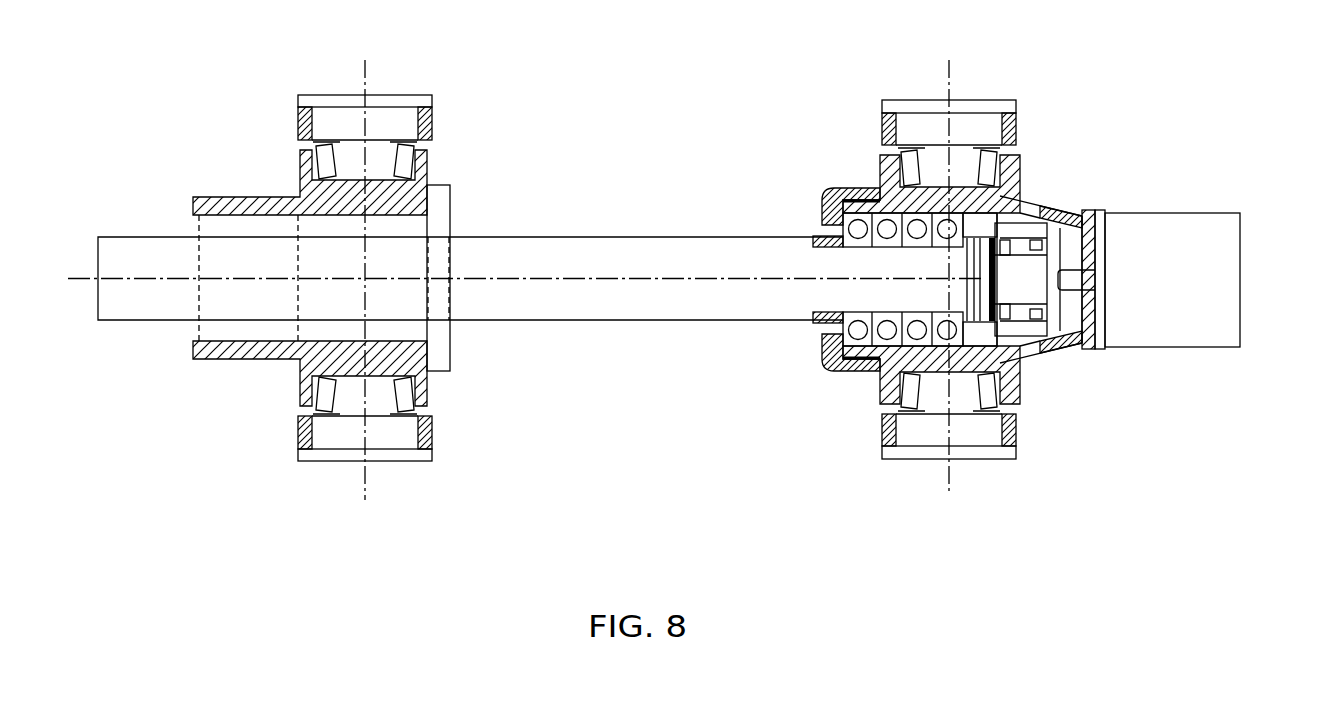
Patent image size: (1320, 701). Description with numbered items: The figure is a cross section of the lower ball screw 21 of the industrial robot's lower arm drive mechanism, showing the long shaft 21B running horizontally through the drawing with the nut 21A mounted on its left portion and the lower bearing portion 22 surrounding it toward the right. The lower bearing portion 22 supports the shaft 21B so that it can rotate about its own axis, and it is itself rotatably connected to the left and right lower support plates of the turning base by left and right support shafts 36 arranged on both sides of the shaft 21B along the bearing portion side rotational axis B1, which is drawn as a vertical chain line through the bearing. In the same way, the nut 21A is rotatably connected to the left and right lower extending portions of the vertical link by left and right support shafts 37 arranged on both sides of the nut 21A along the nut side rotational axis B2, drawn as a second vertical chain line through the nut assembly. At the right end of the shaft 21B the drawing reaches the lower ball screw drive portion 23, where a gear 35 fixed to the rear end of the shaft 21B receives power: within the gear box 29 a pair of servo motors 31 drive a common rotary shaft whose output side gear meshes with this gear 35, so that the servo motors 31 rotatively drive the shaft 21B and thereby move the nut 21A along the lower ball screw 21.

The lower ball screw 21 is at (470, 257).
The nut 21A is at (427, 163).
The shaft 21B is at (645, 242).
The lower bearing portion 22 is at (820, 192).
The lower ball screw drive portion 23 is at (1180, 316).
The gear box 29 is at (1020, 213).
The servo motor 31 is at (1197, 342).
The gear 35 is at (1025, 338).
The support shaft 36 is at (880, 127).
The support shaft 37 is at (297, 112).
The bearing portion side rotational axis B1 is at (952, 87).
The nut side rotational axis B2 is at (367, 79).